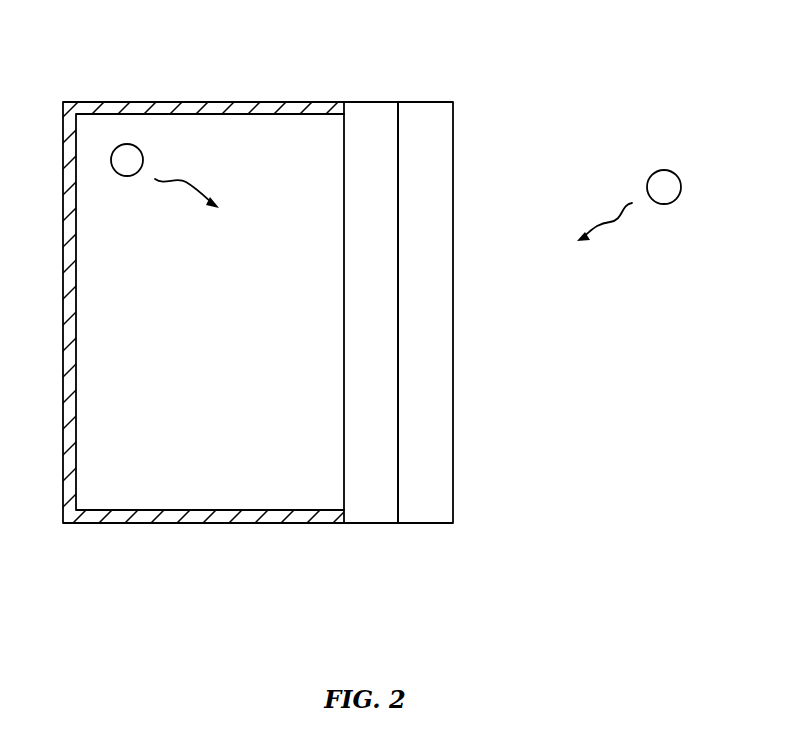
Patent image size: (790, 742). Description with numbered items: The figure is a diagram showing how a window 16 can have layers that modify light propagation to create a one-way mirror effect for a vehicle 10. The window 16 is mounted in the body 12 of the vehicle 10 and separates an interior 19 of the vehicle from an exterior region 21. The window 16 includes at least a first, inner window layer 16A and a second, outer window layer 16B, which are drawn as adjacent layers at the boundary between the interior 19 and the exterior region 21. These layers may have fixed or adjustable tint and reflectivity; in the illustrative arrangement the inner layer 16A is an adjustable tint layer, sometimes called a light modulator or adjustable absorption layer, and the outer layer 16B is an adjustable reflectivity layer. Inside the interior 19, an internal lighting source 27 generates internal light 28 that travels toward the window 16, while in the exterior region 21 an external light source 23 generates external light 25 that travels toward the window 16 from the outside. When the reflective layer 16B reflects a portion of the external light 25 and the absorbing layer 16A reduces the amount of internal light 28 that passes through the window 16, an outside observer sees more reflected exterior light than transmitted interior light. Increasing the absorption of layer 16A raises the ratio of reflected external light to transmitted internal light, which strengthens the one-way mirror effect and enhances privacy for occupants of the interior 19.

The vehicle 10 is at (94, 580).
The body 12 is at (205, 516).
The window 16 is at (453, 537).
The first window layer 16A is at (372, 130).
The second window layer 16B is at (427, 128).
The interior 19 is at (273, 130).
The exterior region 21 is at (610, 102).
The external light source 23 is at (664, 204).
The external light 25 is at (614, 226).
The internal lighting source 27 is at (127, 177).
The internal light 28 is at (185, 181).